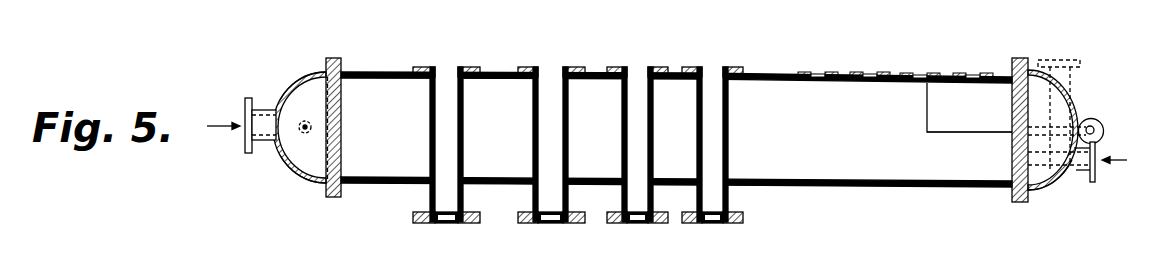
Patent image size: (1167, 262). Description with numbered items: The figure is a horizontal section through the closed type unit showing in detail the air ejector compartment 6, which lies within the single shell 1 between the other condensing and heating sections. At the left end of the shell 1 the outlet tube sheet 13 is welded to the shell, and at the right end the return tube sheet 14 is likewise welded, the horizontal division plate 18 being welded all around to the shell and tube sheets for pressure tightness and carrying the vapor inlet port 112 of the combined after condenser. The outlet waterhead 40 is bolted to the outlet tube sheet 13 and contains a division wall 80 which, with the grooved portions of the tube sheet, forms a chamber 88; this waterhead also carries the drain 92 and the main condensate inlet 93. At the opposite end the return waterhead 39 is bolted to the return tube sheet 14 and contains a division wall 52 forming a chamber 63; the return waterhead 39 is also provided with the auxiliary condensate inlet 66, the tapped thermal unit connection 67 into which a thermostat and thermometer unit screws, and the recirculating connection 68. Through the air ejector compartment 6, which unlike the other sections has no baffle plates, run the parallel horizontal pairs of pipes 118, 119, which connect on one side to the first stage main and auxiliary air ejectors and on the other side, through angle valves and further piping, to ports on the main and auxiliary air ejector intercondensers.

The shell 1 is at (827, 186).
The air ejector compartment 6 is at (810, 132).
The outlet tube sheet 13 is at (344, 58).
The return tube sheet 14 is at (1019, 58).
The division plate 18 is at (962, 174).
The return waterhead 39 is at (1076, 107).
The outlet waterhead 40 is at (293, 165).
The division wall 52 is at (1037, 107).
The chamber 63 is at (1040, 172).
The auxiliary condensate inlet 66 is at (1098, 164).
The tapped thermal unit connection 67 is at (1103, 129).
The recirculating connection 68 is at (1063, 63).
The division wall 80 is at (295, 105).
The chamber 88 is at (312, 88).
The drain 92 is at (312, 127).
The main condensate inlet 93 is at (253, 128).
The vapor inlet port 112 is at (935, 108).
The pipe 118 is at (462, 140).
The pipe 119 is at (698, 110).